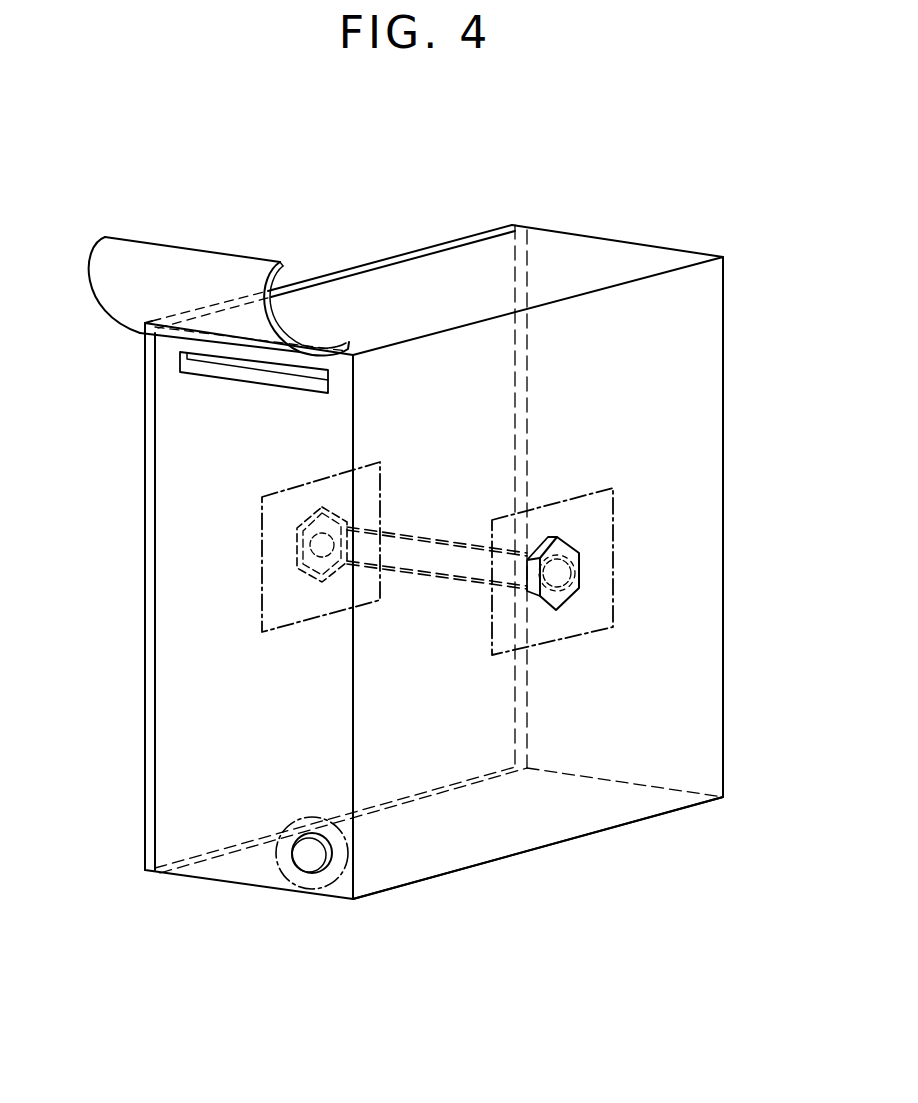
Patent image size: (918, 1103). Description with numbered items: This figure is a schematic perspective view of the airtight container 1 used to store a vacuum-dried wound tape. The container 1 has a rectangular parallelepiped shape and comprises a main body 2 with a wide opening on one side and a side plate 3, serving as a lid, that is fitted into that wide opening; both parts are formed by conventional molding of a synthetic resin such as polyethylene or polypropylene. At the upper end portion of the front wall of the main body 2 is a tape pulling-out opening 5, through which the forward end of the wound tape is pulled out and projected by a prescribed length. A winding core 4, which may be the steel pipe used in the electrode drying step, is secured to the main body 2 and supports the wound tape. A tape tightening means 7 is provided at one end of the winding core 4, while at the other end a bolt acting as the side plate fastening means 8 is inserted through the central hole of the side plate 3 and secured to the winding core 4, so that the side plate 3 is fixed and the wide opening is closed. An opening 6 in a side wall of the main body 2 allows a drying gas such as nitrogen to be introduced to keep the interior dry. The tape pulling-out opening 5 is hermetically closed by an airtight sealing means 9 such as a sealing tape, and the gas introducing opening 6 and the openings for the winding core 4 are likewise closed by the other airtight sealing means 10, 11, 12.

The container 1 is at (362, 250).
The main body 2 is at (665, 750).
The side plate 3 is at (150, 560).
The winding core 4 is at (445, 540).
The tape pulling-out opening 5 is at (182, 358).
The opening 6 is at (297, 860).
The tape tightening means 7 is at (568, 548).
The side plate fastening means 8 is at (292, 545).
The airtight sealing means 9 is at (128, 258).
The airtight sealing means 10 is at (350, 862).
The airtight sealing means 11 is at (603, 614).
The airtight sealing means 12 is at (262, 600).